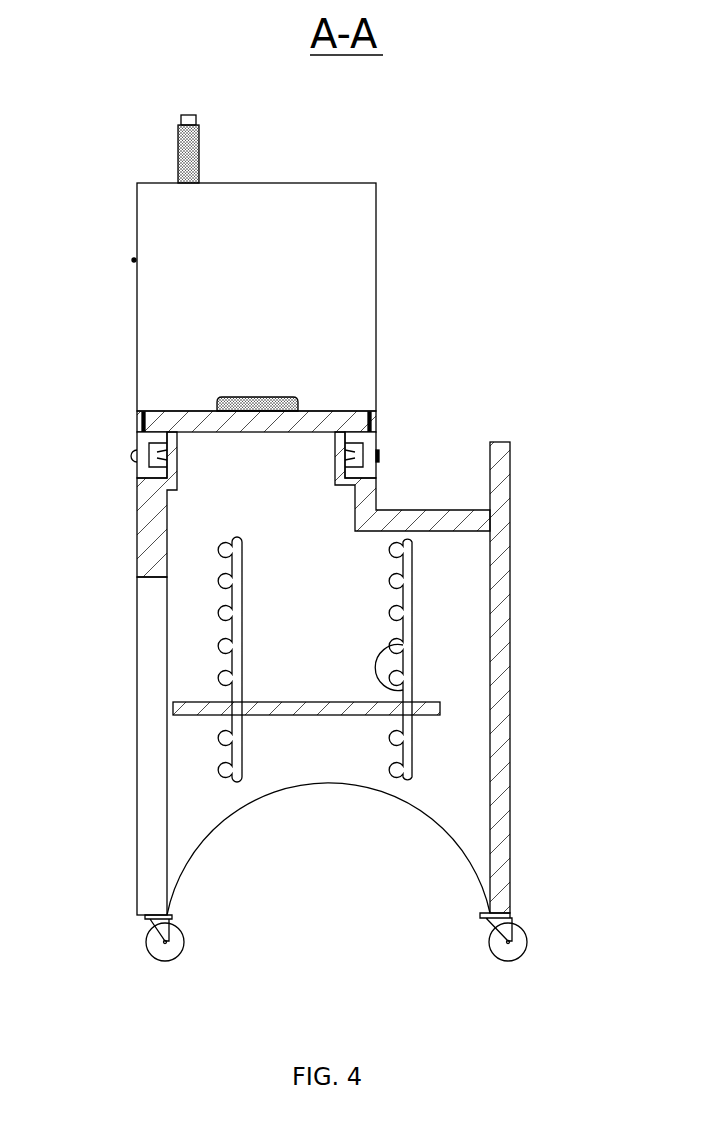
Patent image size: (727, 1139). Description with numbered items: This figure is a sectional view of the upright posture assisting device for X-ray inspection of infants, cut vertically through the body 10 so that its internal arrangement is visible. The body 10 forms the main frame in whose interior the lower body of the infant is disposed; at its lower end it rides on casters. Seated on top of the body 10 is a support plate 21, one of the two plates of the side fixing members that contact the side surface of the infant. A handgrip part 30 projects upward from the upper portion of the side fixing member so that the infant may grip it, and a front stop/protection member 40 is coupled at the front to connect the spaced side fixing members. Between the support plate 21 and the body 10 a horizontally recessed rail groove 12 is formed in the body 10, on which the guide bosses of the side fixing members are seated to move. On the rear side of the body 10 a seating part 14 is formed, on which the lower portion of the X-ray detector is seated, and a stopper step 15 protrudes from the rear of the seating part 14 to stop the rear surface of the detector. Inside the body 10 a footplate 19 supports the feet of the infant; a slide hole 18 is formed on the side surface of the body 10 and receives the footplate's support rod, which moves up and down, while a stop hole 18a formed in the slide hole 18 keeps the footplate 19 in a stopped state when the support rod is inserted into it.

The body 10 is at (152, 540).
The rail groove 12 is at (145, 445).
The seating part 14 is at (430, 508).
The stopper step 15 is at (500, 453).
The slide hole 18 is at (410, 626).
The stop hole 18a is at (410, 688).
The footplate 19 is at (330, 708).
The support plate 21 is at (353, 242).
The handgrip part 30 is at (183, 128).
The front stop/protection member 40 is at (131, 260).